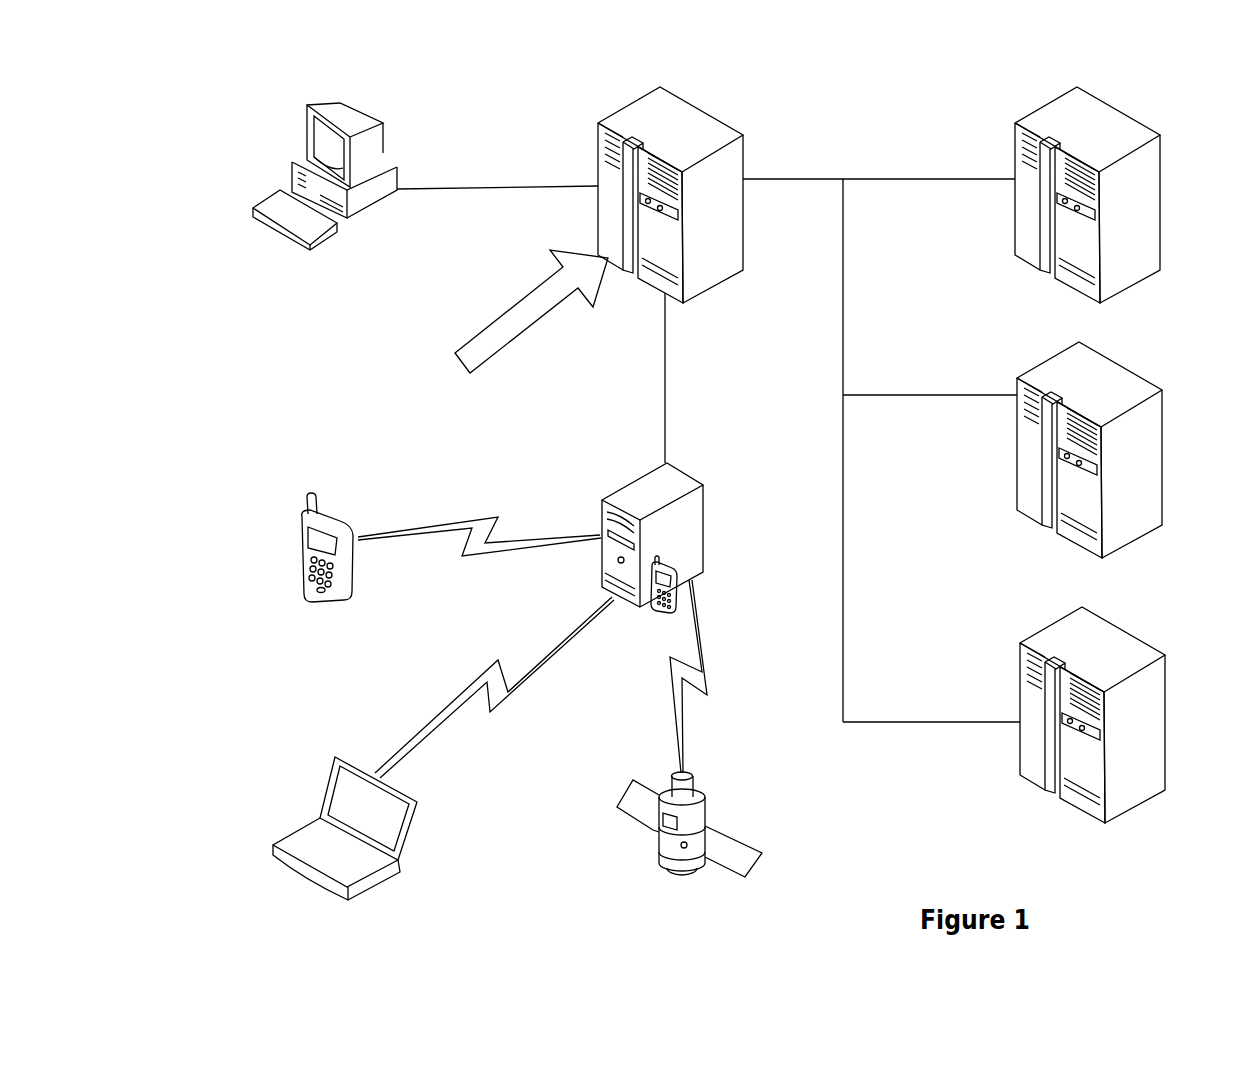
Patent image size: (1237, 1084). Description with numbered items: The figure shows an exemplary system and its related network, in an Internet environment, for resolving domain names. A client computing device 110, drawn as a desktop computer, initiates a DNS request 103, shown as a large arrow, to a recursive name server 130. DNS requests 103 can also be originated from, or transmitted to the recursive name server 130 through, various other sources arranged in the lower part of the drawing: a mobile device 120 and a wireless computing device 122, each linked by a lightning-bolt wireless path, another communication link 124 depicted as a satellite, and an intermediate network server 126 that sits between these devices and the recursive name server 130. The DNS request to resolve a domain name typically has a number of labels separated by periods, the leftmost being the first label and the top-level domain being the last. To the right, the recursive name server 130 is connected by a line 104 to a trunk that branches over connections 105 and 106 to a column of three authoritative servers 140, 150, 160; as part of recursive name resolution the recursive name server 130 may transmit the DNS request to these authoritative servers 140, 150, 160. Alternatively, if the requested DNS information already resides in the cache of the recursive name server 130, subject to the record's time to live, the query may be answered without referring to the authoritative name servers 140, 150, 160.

The client computing device 110 is at (389, 176).
The recursive name server 130 is at (682, 273).
The DNS request 103 is at (506, 322).
The connection to server 140 104 is at (879, 430).
The connection to server 150 105 is at (930, 374).
The connection to server 160 106 is at (931, 699).
The authoritative server 140 is at (1115, 195).
The authoritative server 150 is at (1116, 450).
The authoritative server 160 is at (1116, 715).
The intermediate network server 126 is at (631, 525).
The mobile device 120 is at (411, 547).
The wireless computing device 122 is at (431, 748).
The other communication link 124 is at (663, 731).